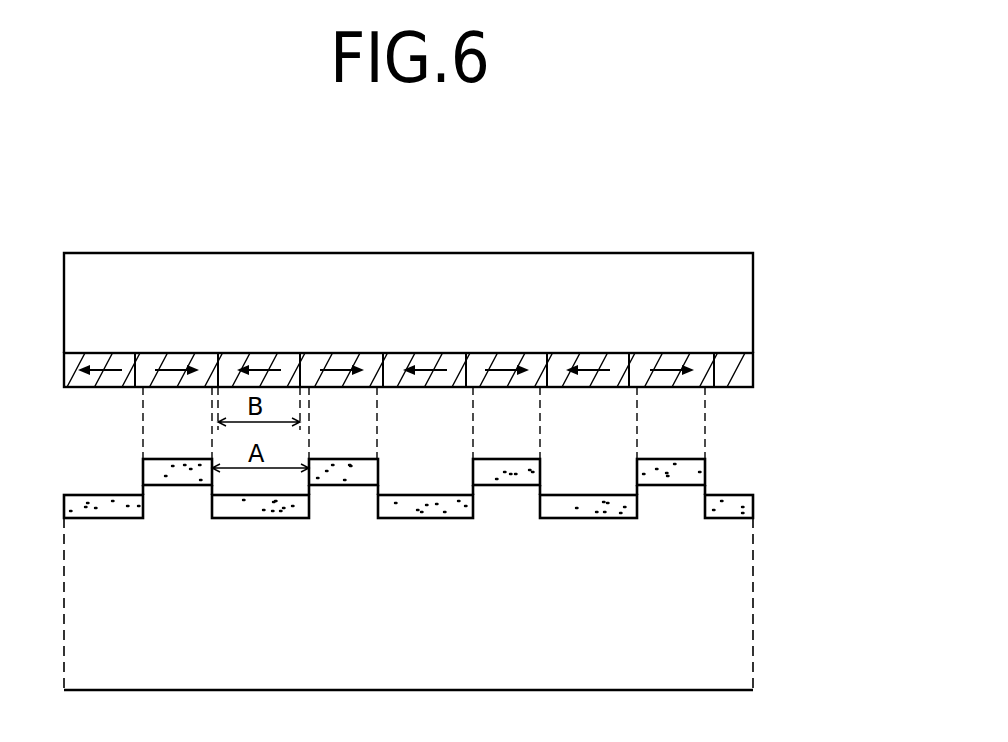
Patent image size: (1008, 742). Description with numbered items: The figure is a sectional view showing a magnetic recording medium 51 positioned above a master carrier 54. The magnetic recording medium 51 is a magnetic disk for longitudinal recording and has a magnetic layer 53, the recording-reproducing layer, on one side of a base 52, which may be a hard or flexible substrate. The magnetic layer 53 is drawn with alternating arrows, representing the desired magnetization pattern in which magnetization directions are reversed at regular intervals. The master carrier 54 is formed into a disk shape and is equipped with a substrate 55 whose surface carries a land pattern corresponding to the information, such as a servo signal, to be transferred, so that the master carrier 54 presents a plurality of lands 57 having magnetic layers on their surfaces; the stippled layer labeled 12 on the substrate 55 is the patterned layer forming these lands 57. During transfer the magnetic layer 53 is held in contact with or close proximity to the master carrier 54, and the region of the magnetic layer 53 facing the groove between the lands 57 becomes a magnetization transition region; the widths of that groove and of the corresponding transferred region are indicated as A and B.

The magnetic recording medium 51 is at (476, 327).
The base 52 is at (738, 302).
The magnetic layer 53 is at (745, 378).
The lands 57 is at (145, 468).
The patterned electrode layer 12 is at (442, 478).
The master carrier 54 is at (465, 564).
The substrate 55 is at (738, 640).